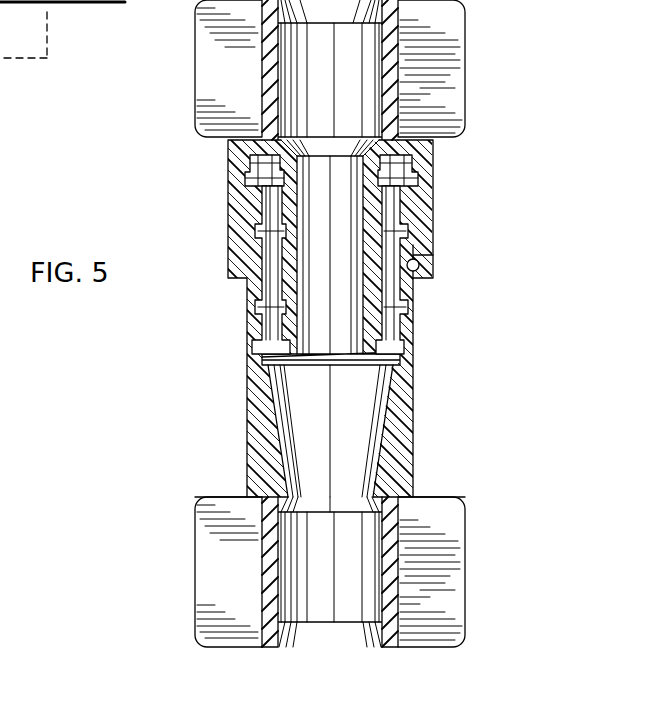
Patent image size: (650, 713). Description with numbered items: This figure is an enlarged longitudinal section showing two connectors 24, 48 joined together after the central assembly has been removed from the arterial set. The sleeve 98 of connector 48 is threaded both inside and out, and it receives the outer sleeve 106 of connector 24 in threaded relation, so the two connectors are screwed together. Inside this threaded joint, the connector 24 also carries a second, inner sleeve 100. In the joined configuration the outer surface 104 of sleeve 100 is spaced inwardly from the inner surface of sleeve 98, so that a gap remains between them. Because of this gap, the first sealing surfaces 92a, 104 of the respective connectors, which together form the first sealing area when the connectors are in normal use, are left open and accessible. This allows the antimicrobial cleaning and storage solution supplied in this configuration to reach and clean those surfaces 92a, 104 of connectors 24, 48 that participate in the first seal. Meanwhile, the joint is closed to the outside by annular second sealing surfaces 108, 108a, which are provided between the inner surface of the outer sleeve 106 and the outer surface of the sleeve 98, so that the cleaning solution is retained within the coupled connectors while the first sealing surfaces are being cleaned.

The connector 24 is at (466, 84).
The connector 48 is at (468, 552).
The sleeve 98 is at (418, 297).
The sleeve 100 is at (262, 276).
The outer surface 104 is at (250, 229).
The outer sleeve 106 is at (425, 203).
The second sealing surface 108 is at (437, 240).
The first sealing surface 92a is at (420, 251).
The second sealing surface 108a is at (420, 268).